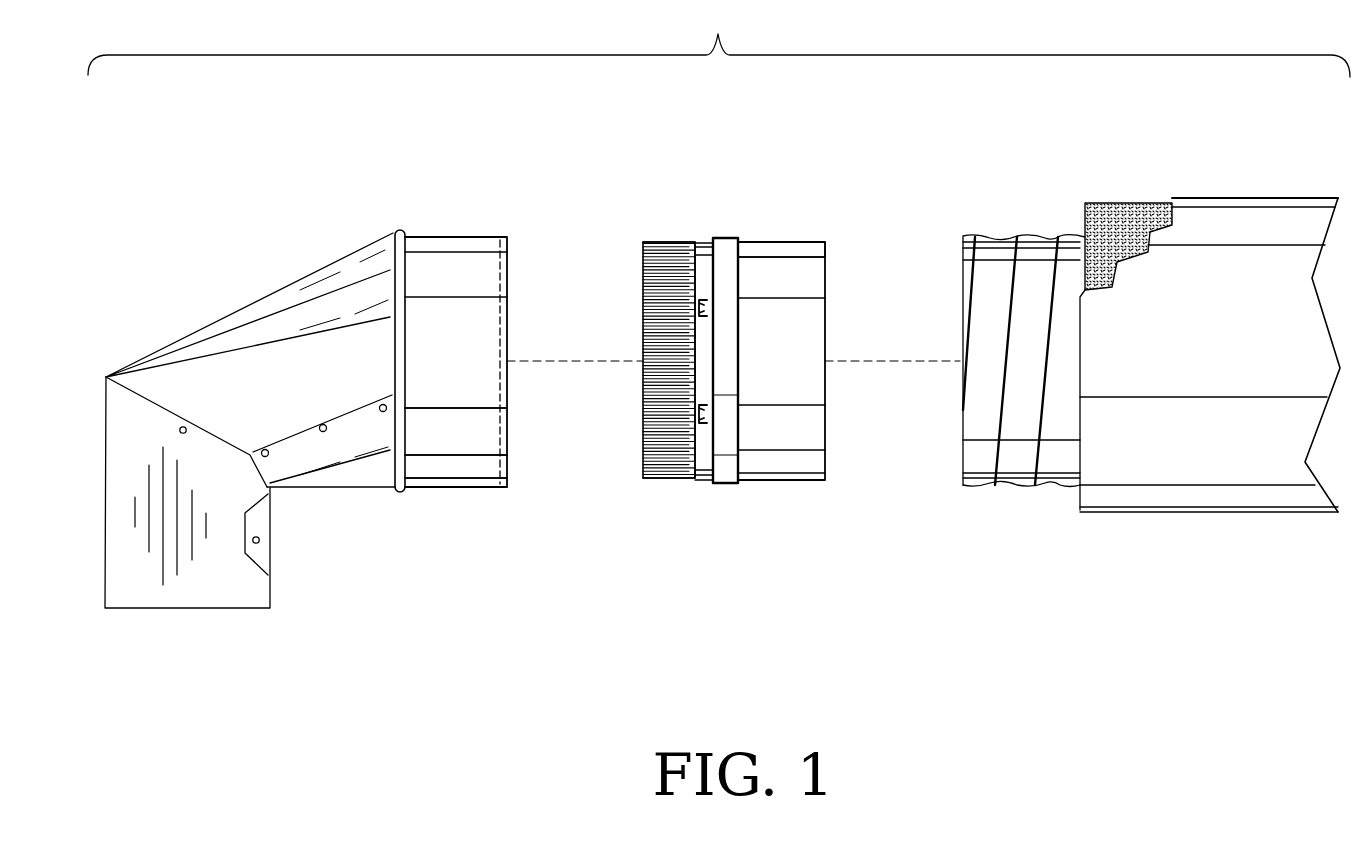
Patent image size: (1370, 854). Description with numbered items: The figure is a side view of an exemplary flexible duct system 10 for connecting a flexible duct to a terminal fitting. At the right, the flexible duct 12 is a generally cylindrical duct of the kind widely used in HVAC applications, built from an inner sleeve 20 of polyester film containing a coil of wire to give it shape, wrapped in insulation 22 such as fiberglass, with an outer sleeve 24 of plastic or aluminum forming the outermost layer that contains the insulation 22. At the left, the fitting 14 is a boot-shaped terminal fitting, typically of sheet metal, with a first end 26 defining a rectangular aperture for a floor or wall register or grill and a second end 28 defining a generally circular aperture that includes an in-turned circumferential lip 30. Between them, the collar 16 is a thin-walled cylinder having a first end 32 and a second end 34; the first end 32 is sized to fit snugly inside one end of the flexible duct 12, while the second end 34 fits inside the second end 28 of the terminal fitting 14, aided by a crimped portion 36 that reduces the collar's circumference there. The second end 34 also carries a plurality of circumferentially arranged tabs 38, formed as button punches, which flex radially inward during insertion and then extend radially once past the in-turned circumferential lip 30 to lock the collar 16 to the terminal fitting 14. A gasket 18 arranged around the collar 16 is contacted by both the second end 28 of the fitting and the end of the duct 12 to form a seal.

The flexible duct system 10 is at (719, 38).
The flexible duct 12 is at (1178, 530).
The terminal fitting 14 is at (330, 490).
The collar 16 is at (746, 377).
The gasket 18 is at (730, 340).
The inner sleeve 20 is at (988, 237).
The insulation 22 is at (1118, 203).
The outer sleeve 24 is at (1232, 198).
The first end 26 is at (157, 610).
The second end 28 is at (507, 267).
The in-turned circumferential lip 30 is at (507, 440).
The first end 32 is at (828, 242).
The second end 34 is at (643, 478).
The crimped portion 36 is at (648, 243).
The tabs 38 is at (712, 307).